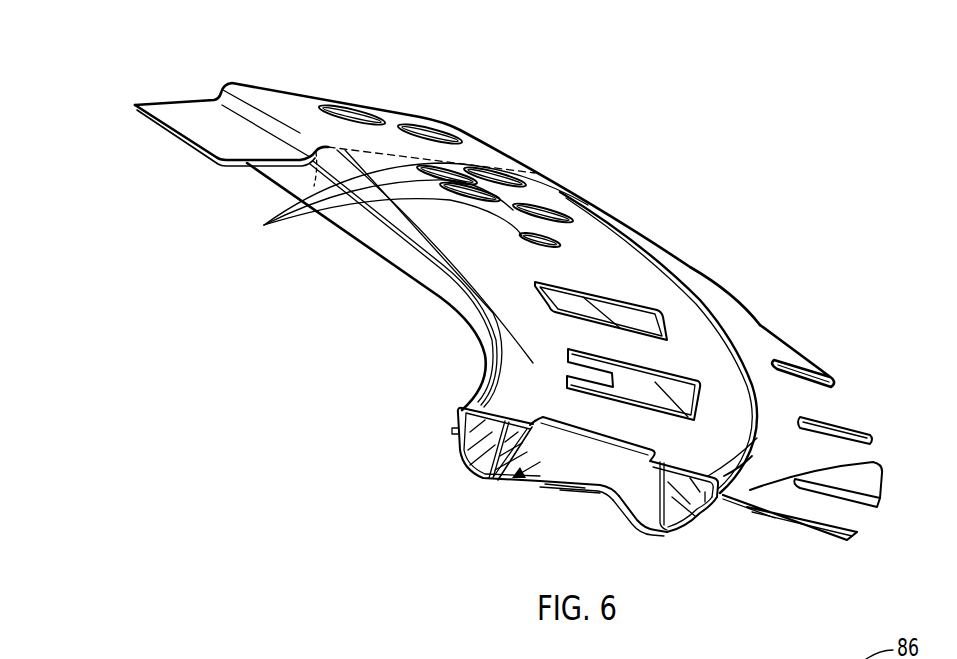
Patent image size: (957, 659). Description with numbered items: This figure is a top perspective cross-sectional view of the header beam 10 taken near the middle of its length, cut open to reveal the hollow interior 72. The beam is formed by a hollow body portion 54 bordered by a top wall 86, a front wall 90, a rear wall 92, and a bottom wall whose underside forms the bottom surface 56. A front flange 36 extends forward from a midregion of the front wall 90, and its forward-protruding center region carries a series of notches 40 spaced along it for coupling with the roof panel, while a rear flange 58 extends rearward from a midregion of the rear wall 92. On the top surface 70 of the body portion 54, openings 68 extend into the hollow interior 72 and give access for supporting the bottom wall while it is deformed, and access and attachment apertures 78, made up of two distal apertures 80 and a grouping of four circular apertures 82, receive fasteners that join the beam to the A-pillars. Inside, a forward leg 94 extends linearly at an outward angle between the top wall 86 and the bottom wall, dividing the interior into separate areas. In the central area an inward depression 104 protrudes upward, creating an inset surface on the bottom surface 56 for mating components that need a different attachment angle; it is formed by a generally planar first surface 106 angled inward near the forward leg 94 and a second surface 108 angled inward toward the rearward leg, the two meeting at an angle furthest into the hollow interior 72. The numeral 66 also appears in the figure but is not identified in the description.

The header beam 10 is at (642, 160).
The front flange 36 is at (882, 468).
The notches 40 is at (836, 388).
The body portion 54 is at (530, 363).
The bottom surface 56 is at (652, 527).
The rear flange 58 is at (387, 232).
The tab 66 is at (777, 333).
The openings 68 is at (640, 293).
The top surface 70 is at (594, 247).
The hollow interior 72 is at (510, 477).
The access and attachment apertures 78 is at (264, 225).
The distal apertures 80 is at (350, 115).
The circular apertures 82 is at (450, 170).
The top wall 86 is at (488, 407).
The front wall 90 is at (700, 522).
The rear wall 92 is at (457, 455).
The forward leg 94 is at (678, 483).
The inward depression 104 is at (577, 510).
The first surface 106 is at (604, 513).
The second surface 108 is at (523, 483).